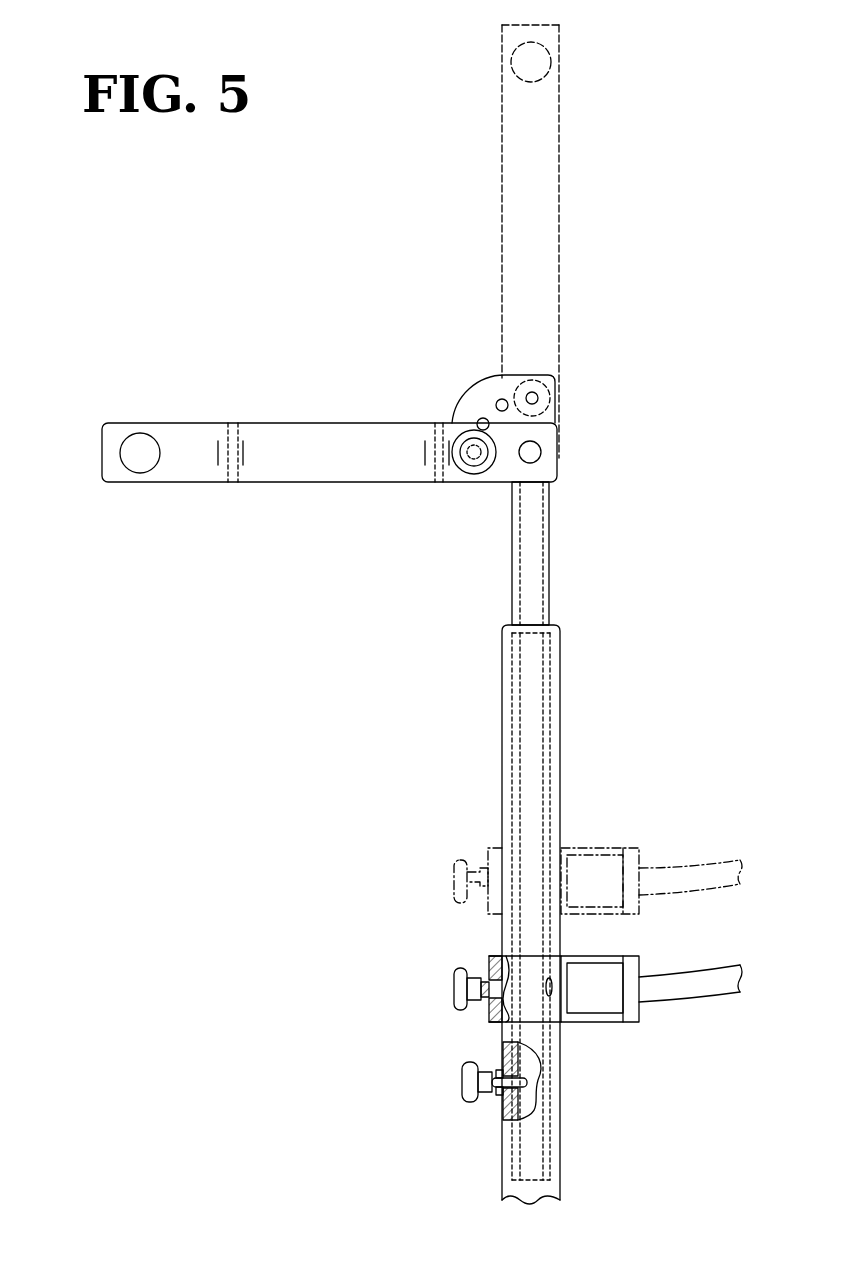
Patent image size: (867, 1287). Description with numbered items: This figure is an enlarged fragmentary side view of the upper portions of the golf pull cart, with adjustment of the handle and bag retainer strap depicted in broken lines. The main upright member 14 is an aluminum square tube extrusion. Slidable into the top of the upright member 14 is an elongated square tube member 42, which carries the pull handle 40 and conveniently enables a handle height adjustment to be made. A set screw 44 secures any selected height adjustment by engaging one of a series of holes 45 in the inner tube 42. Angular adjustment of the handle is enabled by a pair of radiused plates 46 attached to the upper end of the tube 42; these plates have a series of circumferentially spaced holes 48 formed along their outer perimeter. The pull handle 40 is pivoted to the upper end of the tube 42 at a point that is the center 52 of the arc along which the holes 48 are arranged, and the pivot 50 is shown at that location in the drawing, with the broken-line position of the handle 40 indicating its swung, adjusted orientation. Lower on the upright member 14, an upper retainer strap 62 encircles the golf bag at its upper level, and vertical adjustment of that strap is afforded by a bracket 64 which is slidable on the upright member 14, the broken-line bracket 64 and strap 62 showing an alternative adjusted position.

The main upright member 14 is at (567, 692).
The pull handle 40 is at (566, 133).
The elongated square tube member 42 is at (550, 557).
The set screw 44 is at (457, 1064).
The holes 45 is at (503, 1062).
The radiused plates 46 is at (496, 384).
The circumferentially spaced holes 48 is at (497, 400).
The pivot 50 is at (463, 470).
The center 52 is at (533, 452).
The upper retainer strap 62 is at (707, 860).
The bracket 64 is at (592, 848).